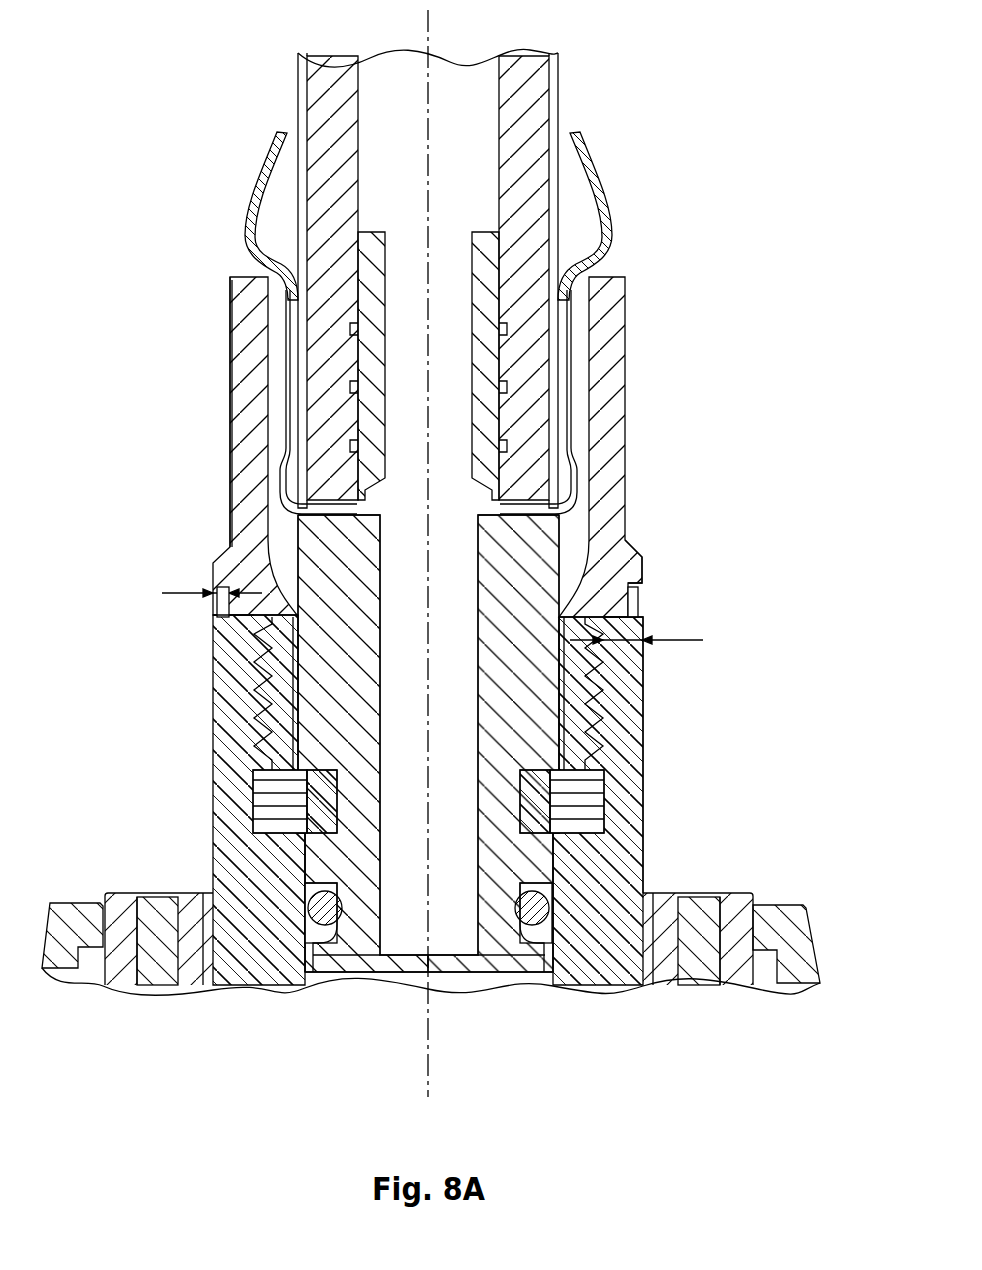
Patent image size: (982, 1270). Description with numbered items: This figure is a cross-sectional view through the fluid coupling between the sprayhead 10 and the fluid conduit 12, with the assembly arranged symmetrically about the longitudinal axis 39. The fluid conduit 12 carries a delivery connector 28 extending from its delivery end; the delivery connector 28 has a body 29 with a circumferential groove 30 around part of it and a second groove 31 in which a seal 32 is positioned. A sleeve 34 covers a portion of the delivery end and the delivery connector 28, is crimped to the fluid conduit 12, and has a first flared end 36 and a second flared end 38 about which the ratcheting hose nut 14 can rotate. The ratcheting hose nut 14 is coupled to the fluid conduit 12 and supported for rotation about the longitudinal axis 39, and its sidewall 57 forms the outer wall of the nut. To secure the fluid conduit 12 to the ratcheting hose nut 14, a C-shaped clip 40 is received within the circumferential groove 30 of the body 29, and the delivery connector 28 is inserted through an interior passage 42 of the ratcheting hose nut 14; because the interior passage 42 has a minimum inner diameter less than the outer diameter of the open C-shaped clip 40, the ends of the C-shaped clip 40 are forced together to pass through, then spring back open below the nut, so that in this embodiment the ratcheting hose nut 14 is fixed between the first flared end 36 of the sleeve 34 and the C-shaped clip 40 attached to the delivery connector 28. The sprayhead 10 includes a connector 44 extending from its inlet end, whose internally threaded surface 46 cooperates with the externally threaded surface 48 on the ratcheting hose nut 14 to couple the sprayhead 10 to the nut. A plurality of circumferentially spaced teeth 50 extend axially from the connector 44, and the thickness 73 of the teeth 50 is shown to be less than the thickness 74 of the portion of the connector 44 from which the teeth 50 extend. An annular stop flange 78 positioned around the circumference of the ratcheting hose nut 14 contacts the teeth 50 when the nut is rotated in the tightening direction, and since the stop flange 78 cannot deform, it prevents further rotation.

The sprayhead 10 is at (785, 905).
The fluid conduit 12 is at (560, 80).
The ratcheting hose nut 14 is at (625, 370).
The delivery connector 28 is at (540, 565).
The body 29 is at (537, 860).
The circumferential groove 30 is at (610, 782).
The second groove 31 is at (534, 935).
The seal 32 is at (573, 940).
The sleeve 34 is at (262, 178).
The first flared end 36 is at (612, 237).
The second flared end 38 is at (623, 457).
The longitudinal axis 39 is at (428, 1070).
The C-shaped clip 40 is at (253, 820).
The interior passage 42 is at (280, 365).
The connector 44 is at (643, 708).
The internally threaded surface 46 is at (267, 773).
The externally threaded surface 48 is at (230, 707).
The teeth 50 is at (212, 612).
The sidewall 57 is at (238, 432).
The thickness of teeth 73 is at (178, 590).
The thickness of connector portion 74 is at (683, 645).
The annular stop flange 78 is at (645, 575).